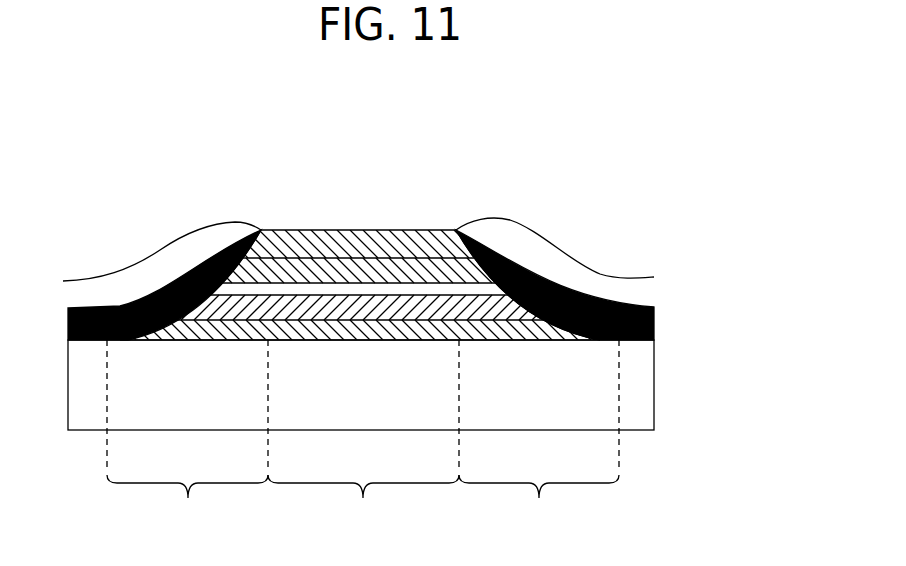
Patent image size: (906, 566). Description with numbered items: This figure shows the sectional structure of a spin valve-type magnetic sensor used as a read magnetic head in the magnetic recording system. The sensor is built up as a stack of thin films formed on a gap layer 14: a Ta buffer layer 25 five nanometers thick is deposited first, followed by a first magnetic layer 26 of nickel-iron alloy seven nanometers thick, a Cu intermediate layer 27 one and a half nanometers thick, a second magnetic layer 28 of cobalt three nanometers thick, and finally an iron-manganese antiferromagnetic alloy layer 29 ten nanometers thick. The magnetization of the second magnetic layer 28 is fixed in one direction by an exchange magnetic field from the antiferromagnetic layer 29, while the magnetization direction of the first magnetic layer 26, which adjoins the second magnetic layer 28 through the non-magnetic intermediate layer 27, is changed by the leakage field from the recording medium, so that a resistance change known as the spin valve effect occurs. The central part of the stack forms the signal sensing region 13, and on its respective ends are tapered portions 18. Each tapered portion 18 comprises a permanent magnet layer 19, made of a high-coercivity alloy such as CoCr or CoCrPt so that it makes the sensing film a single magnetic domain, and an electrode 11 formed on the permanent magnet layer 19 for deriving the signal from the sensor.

The electrode 11 is at (187, 260).
The signal sensing region 13 is at (363, 507).
The gap layer 14 is at (637, 390).
The tapered portion 18 is at (363, 440).
The permanent magnet layer 19 is at (137, 300).
The Ta buffer layer 25 is at (413, 330).
The first magnetic layer 26 is at (365, 307).
The Cu intermediate layer 27 is at (327, 290).
The second magnetic layer 28 is at (303, 258).
The antiferromagnetic layer 29 is at (290, 240).